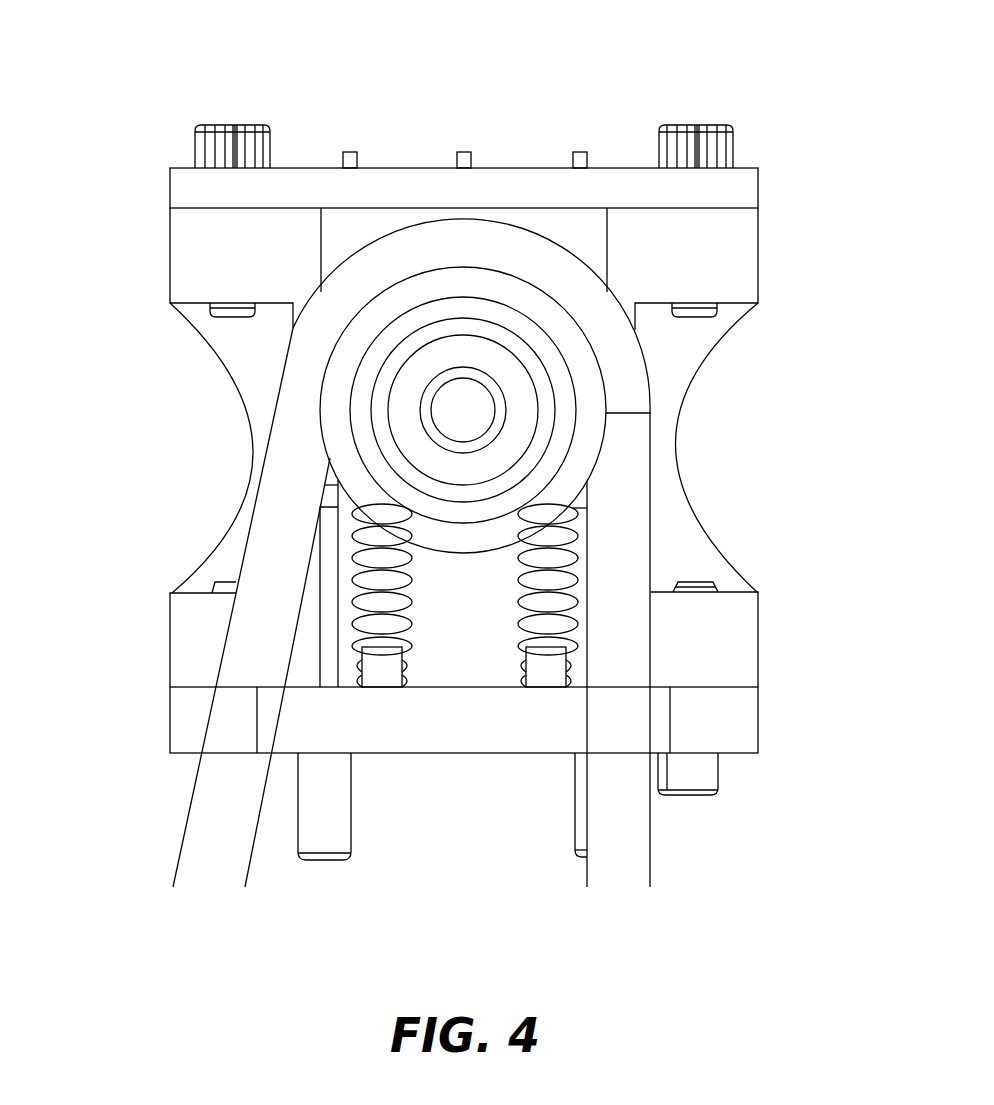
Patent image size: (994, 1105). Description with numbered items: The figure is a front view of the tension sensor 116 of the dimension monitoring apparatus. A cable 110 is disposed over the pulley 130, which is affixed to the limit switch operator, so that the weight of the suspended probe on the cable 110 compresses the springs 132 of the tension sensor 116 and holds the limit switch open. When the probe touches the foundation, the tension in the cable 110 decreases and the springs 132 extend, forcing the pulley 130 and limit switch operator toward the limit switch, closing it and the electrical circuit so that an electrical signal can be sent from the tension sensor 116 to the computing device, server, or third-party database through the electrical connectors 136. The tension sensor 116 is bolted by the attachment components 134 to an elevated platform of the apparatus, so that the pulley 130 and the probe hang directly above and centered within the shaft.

The tension sensor 116 is at (150, 100).
The cable 110 is at (630, 553).
The pulley 130 is at (343, 428).
The spring 132 is at (357, 590).
The attachment component 134 is at (320, 833).
The electrical connector 136 is at (350, 152).